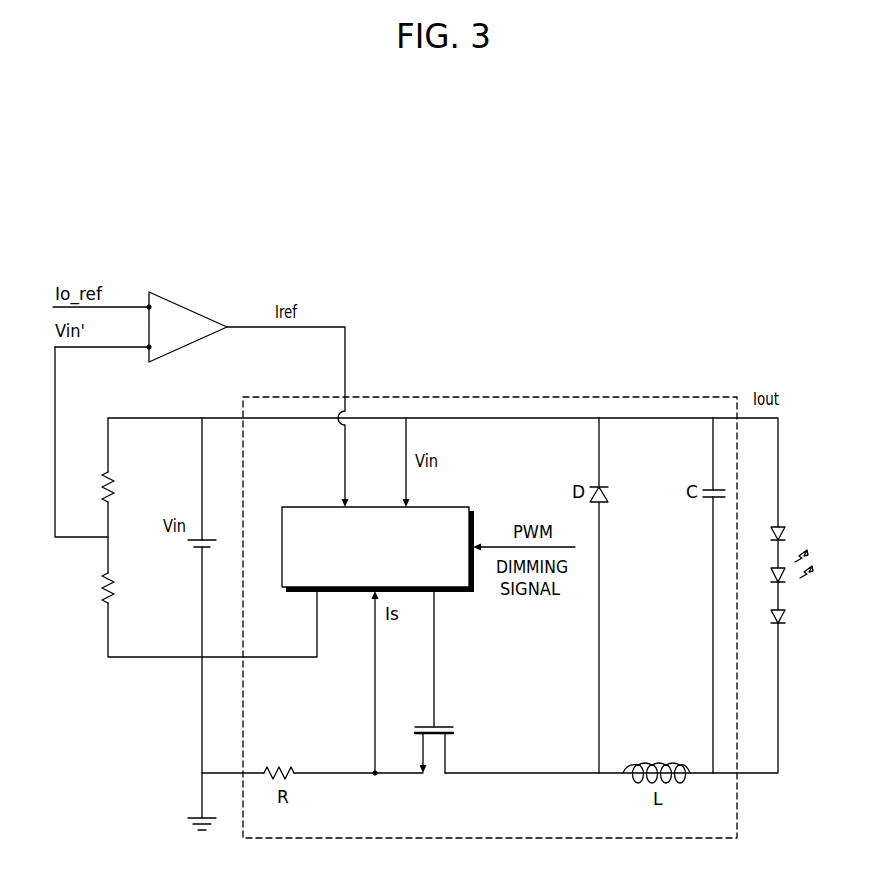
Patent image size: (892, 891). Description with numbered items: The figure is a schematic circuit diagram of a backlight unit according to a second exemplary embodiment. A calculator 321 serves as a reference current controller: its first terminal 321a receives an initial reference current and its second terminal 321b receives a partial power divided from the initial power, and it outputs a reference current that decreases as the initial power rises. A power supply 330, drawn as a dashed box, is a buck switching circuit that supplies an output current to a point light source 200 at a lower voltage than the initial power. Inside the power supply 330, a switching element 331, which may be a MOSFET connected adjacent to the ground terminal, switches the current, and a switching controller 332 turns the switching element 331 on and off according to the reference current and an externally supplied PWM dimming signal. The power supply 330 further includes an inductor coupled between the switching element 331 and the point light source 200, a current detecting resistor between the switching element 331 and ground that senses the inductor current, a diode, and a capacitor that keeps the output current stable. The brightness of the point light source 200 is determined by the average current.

The calculator 321 is at (198, 308).
The first terminal 321a is at (149, 307).
The second terminal 321b is at (149, 348).
The power supply 330 is at (545, 397).
The switching element 331 is at (433, 770).
The switching controller 332 is at (300, 507).
The point light source 200 is at (782, 525).